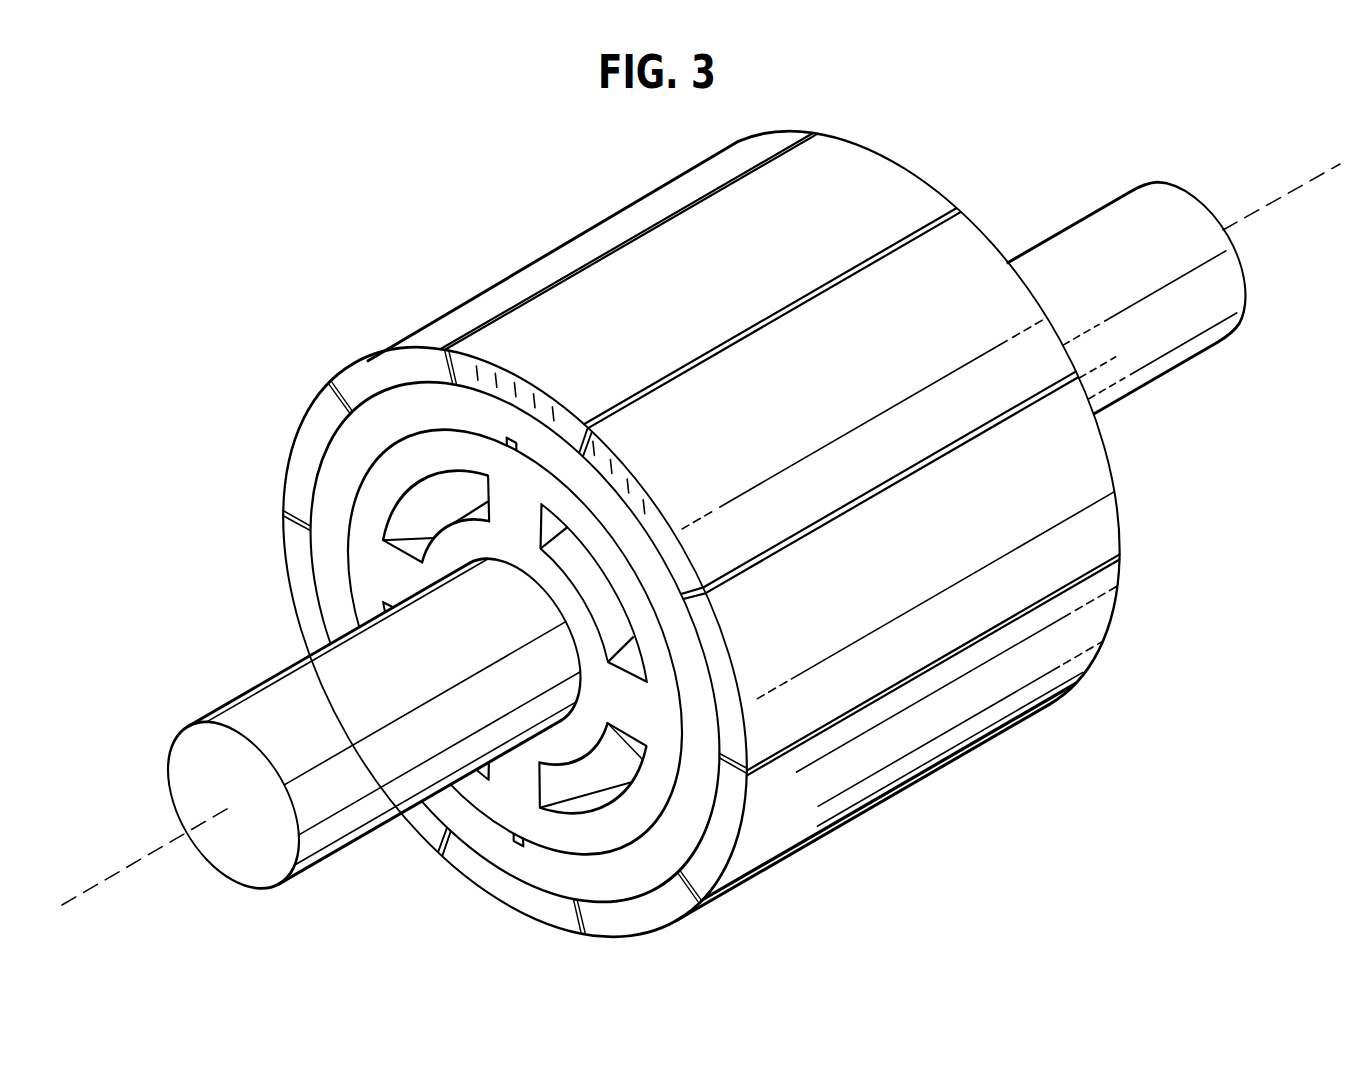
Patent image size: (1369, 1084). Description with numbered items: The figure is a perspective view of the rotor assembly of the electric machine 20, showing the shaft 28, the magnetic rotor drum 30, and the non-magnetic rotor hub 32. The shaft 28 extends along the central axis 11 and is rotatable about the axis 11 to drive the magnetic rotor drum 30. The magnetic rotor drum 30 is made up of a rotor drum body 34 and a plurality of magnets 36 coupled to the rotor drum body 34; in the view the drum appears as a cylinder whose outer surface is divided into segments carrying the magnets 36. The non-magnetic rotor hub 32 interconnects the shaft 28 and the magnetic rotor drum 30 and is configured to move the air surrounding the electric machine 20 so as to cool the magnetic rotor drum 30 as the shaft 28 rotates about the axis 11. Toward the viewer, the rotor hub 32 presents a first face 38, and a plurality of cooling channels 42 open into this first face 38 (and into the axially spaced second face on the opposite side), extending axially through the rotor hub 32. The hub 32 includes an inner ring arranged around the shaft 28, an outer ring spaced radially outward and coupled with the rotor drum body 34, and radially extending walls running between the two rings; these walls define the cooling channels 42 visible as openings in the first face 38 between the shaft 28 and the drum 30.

The central axis 11 is at (123, 866).
The electric machine 20 is at (255, 197).
The shaft 28 is at (276, 683).
The magnetic rotor drum 30 is at (469, 174).
The non-magnetic rotor hub 32 is at (661, 727).
The rotor drum body 34 is at (393, 372).
The magnets 36 is at (738, 400).
The first face 38 is at (383, 563).
The cooling channels 42 is at (573, 780).